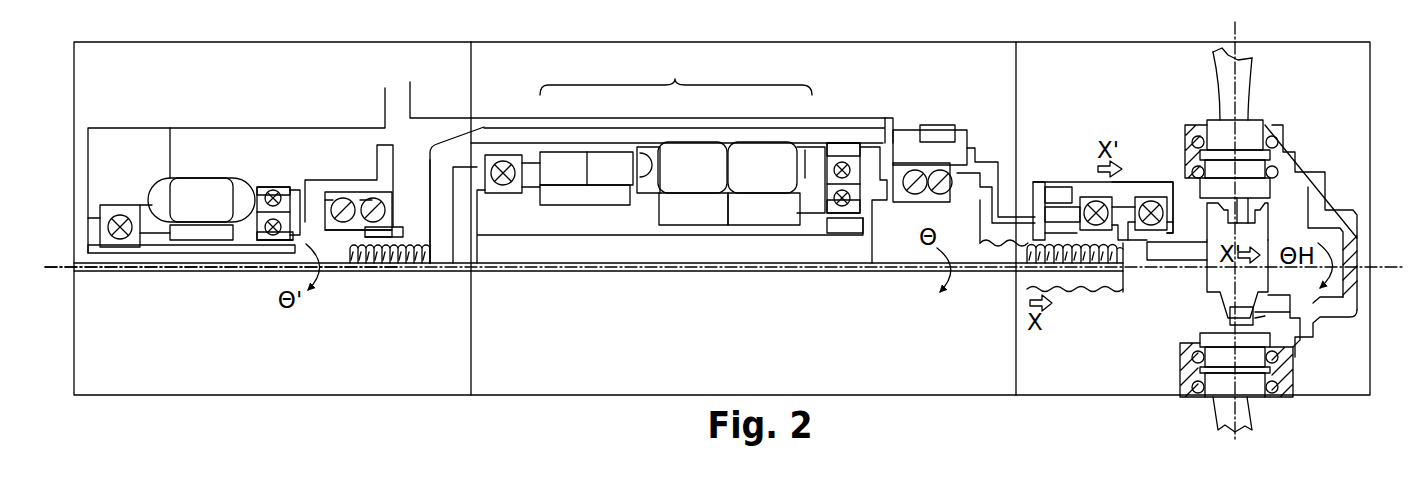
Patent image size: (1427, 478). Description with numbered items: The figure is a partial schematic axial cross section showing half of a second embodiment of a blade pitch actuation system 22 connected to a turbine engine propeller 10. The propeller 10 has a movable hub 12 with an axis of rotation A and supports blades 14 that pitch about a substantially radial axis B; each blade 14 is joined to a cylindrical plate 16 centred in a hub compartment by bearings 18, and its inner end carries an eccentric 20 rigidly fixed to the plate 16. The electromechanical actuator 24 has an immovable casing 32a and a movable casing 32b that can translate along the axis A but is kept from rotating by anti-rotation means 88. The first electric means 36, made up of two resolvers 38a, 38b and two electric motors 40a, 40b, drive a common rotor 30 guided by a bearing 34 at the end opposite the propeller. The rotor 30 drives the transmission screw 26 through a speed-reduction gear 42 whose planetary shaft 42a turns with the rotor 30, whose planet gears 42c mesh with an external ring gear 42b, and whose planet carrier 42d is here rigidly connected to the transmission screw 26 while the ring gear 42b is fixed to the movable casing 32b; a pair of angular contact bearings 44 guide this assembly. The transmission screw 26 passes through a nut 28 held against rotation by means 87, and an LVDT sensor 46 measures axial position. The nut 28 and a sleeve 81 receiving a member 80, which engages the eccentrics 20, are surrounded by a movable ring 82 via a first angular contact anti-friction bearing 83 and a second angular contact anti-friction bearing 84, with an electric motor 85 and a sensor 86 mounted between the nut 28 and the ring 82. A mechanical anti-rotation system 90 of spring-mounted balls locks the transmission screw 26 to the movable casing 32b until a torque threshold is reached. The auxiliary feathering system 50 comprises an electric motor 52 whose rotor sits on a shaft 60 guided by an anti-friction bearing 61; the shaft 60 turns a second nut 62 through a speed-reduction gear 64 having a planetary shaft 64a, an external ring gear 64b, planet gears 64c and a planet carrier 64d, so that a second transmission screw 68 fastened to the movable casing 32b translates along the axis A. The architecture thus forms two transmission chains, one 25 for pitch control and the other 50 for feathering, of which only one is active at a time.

The propeller 10 is at (1277, 78).
The hub 12 is at (1318, 170).
The blade 14 is at (1220, 82).
The plate 16 is at (1305, 118).
The bearings 18 is at (1297, 382).
The eccentric 20 is at (1290, 327).
The actuation system 22 is at (610, 28).
The electromechanical actuator 24 is at (505, 50).
The transmission chain for controlling the blade pitch 25 is at (895, 40).
The transmission screw 26 is at (1090, 278).
The nut 28 is at (1045, 236).
The rotor 30 is at (612, 222).
The immovable casing 32a is at (348, 147).
The movable casing 32b is at (895, 131).
The bearing 34 is at (494, 210).
The first electric means 36 is at (676, 72).
The resolver 38a is at (557, 165).
The resolver 38b is at (616, 172).
The electric motor 40a is at (702, 165).
The electric motor 40b is at (748, 165).
The speed-reduction gear 42 is at (818, 168).
The planetary shaft 42a is at (838, 225).
The external ring gear 42b is at (847, 150).
The planet gears 42c is at (843, 222).
The planet carrier 42d is at (883, 218).
The bearings 44 is at (928, 150).
The LVDT sensor 46 is at (532, 272).
The auxiliary system for feathering 50 is at (160, 40).
The electric motor 52 is at (192, 194).
The shaft 60 is at (190, 254).
The anti-friction bearing 61 is at (345, 193).
The second nut 62 is at (400, 228).
The speed-reduction gear 64 is at (252, 172).
The planetary shaft 64a is at (280, 243).
The external ring gear 64b is at (283, 188).
The planet gears 64c is at (290, 258).
The planet carrier 64d is at (257, 212).
The second transmission screw 68 is at (418, 260).
The member 80 is at (1193, 253).
The sleeve 81 is at (1135, 262).
The movable ring 82 is at (1124, 196).
The first angular contact anti-friction bearing 83 is at (1086, 200).
The second angular contact anti-friction bearing 84 is at (1138, 200).
The electric motor 85 is at (1055, 194).
The sensor 86 is at (1035, 200).
The means for preventing the nut from rotating 87 is at (978, 150).
The anti-rotation means 88 is at (490, 128).
The mechanical anti-rotation system 90 is at (972, 202).
The axis of rotation A is at (60, 270).
The axis B is at (1237, 30).